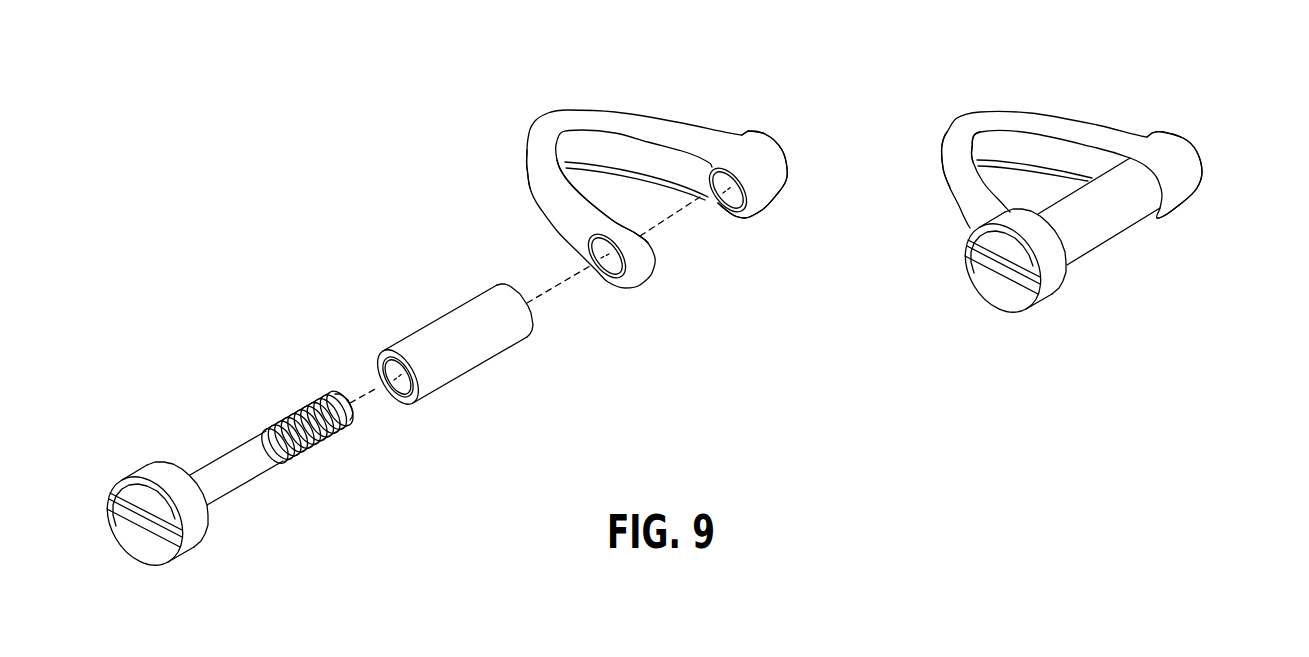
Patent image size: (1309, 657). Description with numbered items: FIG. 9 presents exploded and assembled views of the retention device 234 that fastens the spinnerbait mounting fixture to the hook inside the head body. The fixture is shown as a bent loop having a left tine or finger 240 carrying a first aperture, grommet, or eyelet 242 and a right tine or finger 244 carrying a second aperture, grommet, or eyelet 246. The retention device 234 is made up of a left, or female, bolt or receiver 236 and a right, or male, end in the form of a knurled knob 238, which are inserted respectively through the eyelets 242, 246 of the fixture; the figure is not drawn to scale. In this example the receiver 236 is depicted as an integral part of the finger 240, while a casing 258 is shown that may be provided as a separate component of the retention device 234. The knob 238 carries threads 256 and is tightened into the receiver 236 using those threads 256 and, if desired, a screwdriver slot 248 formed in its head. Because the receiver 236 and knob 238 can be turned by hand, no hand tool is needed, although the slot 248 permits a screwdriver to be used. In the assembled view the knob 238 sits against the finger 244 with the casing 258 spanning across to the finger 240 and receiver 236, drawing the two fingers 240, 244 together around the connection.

The retention device 234 is at (457, 426).
The receiver 236 is at (778, 150).
The knob 238 is at (599, 413).
The left finger 240 is at (703, 130).
The first eyelet 242 is at (723, 222).
The right finger 244 is at (578, 207).
The second eyelet 246 is at (603, 290).
The screwdriver slot 248 is at (118, 540).
The threads 256 is at (322, 442).
The casing 258 is at (480, 353).